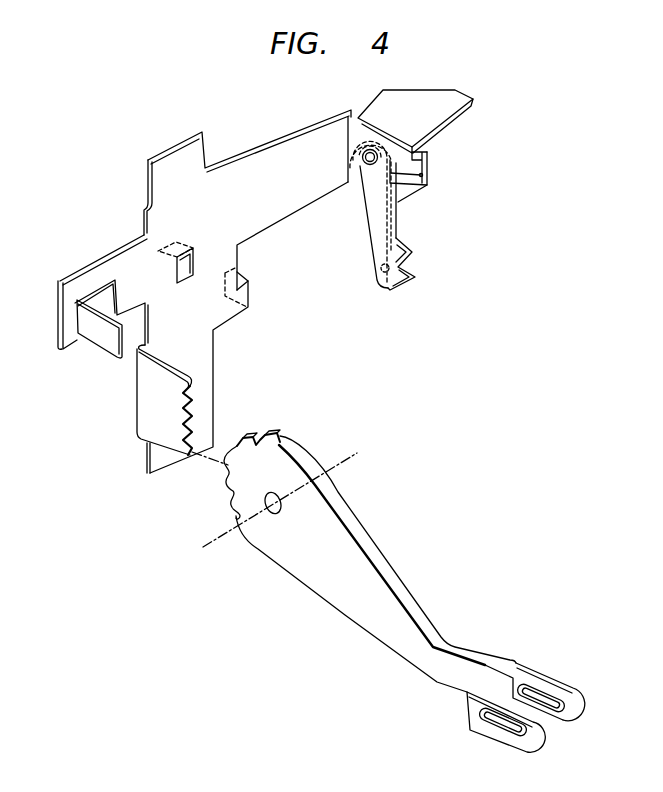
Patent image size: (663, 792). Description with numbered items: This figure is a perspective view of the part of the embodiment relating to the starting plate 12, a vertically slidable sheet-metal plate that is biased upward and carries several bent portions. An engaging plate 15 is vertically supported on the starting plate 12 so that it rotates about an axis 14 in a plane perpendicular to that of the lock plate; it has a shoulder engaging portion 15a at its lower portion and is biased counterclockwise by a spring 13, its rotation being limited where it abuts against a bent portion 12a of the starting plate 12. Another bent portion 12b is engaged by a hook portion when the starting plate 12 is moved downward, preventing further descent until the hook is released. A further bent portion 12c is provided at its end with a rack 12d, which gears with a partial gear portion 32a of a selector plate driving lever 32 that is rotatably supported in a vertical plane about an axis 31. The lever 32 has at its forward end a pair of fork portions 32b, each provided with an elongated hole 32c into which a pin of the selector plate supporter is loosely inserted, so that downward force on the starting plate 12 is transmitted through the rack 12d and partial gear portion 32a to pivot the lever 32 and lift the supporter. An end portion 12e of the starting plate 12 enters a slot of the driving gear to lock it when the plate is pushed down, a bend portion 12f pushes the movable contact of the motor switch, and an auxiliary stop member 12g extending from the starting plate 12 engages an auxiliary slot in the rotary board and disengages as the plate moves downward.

The starting plate 12 is at (235, 163).
The bent portion 12a is at (412, 192).
The bent portion 12b is at (240, 272).
The bent portion 12c is at (168, 377).
The rack 12d is at (185, 392).
The end portion 12e is at (72, 314).
The bend portion 12f is at (170, 243).
The auxiliary stop member 12g is at (103, 337).
The spring 13 is at (377, 243).
The axis 14 is at (365, 165).
The engaging plate 15 is at (373, 216).
The shoulder engaging portion 15a is at (405, 247).
The axis 31 is at (223, 543).
The selector plate driving lever 32 is at (357, 527).
The partial gear portion 32a is at (245, 433).
The fork portions 32b is at (572, 697).
The elongated holes 32c is at (533, 696).